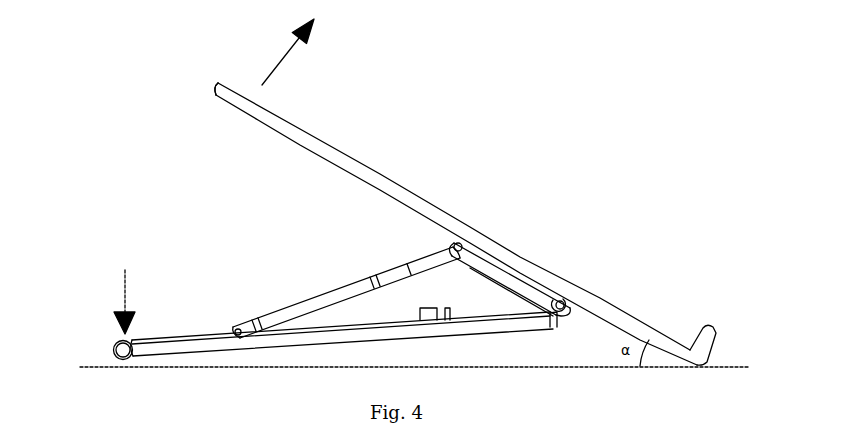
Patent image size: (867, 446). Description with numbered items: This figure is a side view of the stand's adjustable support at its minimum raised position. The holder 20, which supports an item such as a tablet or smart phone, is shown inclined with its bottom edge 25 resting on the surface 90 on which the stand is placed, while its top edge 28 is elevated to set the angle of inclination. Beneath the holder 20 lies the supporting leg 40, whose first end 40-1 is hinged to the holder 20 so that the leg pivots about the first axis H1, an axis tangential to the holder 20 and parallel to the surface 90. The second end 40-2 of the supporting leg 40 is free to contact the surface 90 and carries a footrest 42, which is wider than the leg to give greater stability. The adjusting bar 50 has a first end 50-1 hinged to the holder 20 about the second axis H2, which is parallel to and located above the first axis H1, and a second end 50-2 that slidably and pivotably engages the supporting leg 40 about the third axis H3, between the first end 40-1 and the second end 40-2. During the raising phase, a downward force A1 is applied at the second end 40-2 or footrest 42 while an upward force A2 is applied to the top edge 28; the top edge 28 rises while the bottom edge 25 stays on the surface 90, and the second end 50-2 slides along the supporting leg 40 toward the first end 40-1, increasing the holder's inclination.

The holder 20 is at (407, 191).
The bottom edge 25 is at (705, 366).
The top edge 28 is at (215, 90).
The supporting leg 40 is at (278, 345).
The first end of the supporting leg 40-1 is at (553, 320).
The second end of the supporting leg 40-2 is at (140, 353).
The footrest 42 is at (112, 349).
The adjusting bar 50 is at (328, 283).
The first end of the adjusting bar 50-1 is at (450, 253).
The second end of the adjusting bar 50-2 is at (243, 330).
The surface 90 is at (665, 368).
The first axis H1 is at (565, 298).
The second axis H2 is at (461, 243).
The third axis H3 is at (240, 334).
The downward force A1 is at (122, 292).
The upward force A2 is at (281, 63).